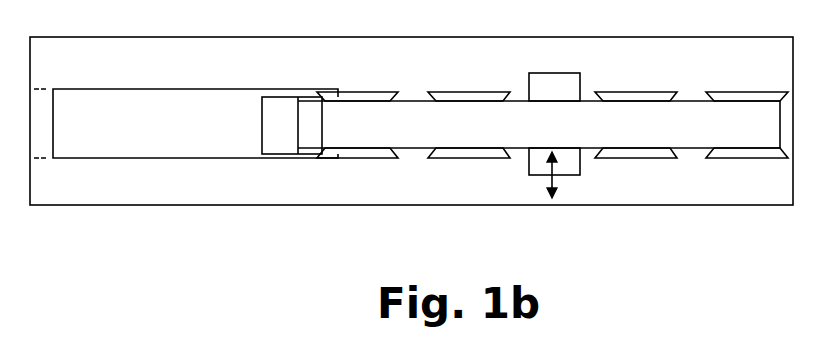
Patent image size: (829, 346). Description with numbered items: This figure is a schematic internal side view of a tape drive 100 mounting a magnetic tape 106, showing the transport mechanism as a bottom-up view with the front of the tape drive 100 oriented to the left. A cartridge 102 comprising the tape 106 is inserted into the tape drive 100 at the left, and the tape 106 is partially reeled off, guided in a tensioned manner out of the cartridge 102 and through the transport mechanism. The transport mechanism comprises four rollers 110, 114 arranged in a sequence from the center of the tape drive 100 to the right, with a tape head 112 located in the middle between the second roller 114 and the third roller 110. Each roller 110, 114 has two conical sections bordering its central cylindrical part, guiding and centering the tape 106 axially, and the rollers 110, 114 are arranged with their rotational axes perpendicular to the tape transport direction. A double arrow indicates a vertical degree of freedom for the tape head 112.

The tape drive 100 is at (77, 70).
The cartridge 102 is at (167, 135).
The magnetic tape 106 is at (485, 133).
The roller 110 is at (358, 92).
The tape head 112 is at (572, 98).
The roller 114 is at (443, 158).